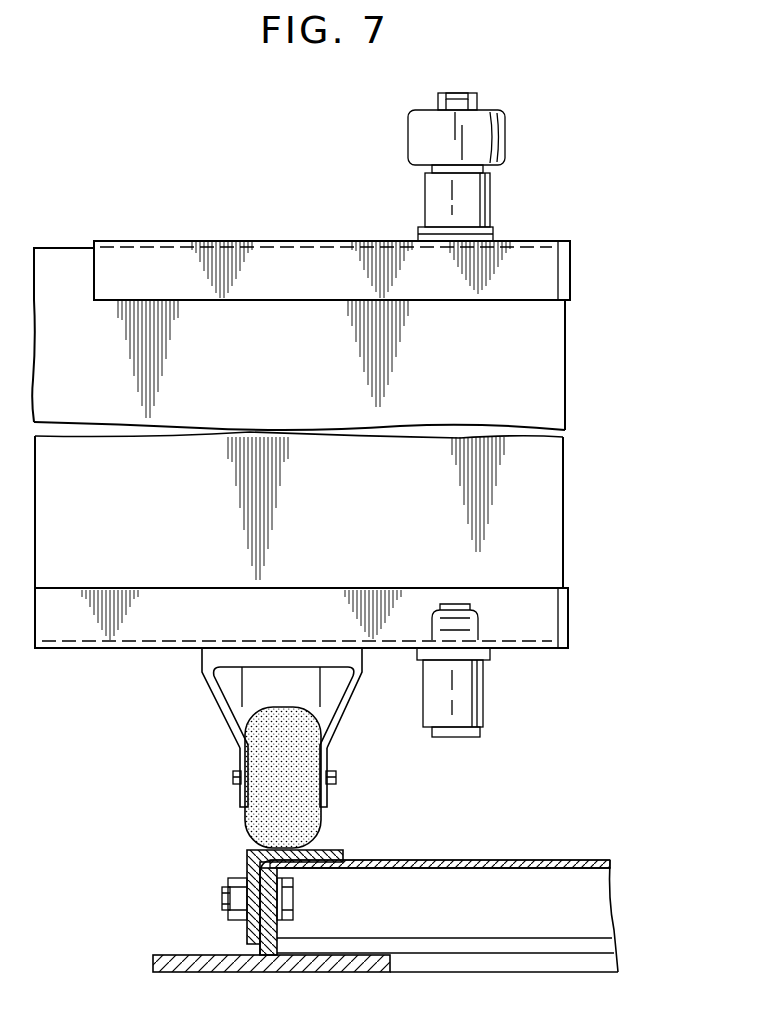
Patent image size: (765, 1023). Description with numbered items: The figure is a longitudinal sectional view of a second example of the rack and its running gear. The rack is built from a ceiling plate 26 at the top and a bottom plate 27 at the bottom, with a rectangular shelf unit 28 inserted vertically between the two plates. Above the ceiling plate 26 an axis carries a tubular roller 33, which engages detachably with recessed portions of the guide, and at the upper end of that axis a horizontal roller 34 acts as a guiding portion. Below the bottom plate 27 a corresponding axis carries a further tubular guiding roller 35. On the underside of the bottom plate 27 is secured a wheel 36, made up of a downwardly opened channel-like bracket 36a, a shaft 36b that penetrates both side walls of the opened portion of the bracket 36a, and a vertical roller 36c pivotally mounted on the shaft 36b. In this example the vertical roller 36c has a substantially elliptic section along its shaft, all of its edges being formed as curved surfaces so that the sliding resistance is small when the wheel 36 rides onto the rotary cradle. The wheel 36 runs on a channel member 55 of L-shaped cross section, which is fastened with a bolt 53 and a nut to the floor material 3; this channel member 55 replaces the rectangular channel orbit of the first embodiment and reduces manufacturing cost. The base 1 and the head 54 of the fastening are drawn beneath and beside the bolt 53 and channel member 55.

The base plate 1 is at (172, 955).
The floor rod 3 is at (470, 860).
The ceiling plate 26 is at (361, 242).
The bottom plate 27 is at (545, 648).
The shelf unit 28 is at (558, 514).
The tubular roller 33 is at (492, 197).
The horizontal roller 34 is at (507, 135).
The roller 35 is at (486, 706).
The wheel 36 is at (257, 748).
The bracket 36a is at (225, 717).
The shaft 36b is at (235, 783).
The vertical roller 36c is at (240, 824).
The bolt 53 is at (295, 900).
The bolt 54 is at (240, 879).
The channel member 55 is at (338, 850).